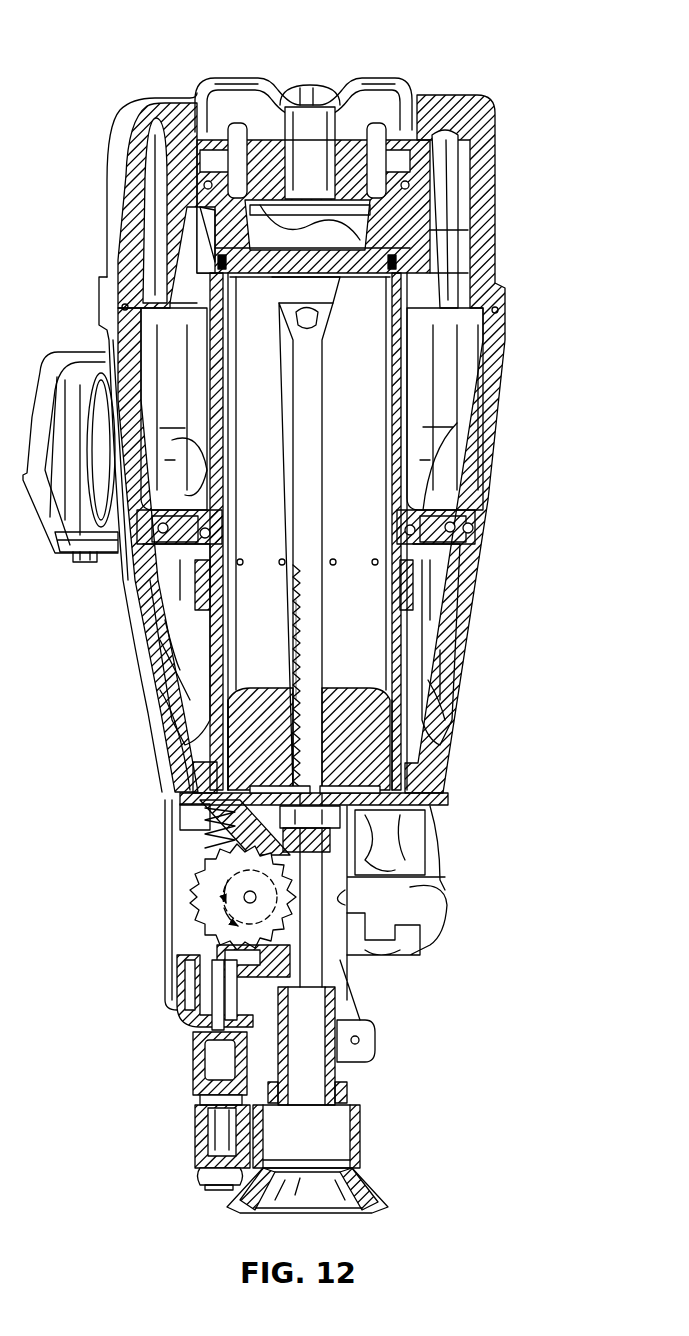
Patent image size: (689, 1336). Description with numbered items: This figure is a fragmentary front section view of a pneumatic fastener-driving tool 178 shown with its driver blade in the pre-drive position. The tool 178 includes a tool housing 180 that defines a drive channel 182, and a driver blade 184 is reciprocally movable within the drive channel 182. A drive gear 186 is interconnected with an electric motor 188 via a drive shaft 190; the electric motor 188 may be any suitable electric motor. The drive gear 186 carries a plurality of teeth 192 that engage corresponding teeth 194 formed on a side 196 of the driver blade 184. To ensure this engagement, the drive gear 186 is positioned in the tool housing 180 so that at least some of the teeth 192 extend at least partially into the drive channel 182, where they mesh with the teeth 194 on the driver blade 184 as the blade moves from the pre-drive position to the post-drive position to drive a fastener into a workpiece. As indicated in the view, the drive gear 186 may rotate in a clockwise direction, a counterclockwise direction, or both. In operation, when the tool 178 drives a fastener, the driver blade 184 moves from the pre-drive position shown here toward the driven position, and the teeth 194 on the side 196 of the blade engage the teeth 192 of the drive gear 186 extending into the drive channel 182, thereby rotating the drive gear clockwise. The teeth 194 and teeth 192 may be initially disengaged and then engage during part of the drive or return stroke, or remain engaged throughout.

The tool 178 is at (484, 38).
The tool housing 180 is at (487, 243).
The drive channel 182 is at (337, 900).
The driver blade 184 is at (310, 414).
The drive gear 186 is at (195, 897).
The electric motor 188 is at (212, 865).
The drive shaft 190 is at (258, 895).
The teeth 192 is at (222, 910).
The teeth 194 is at (294, 613).
The side 196 is at (288, 539).